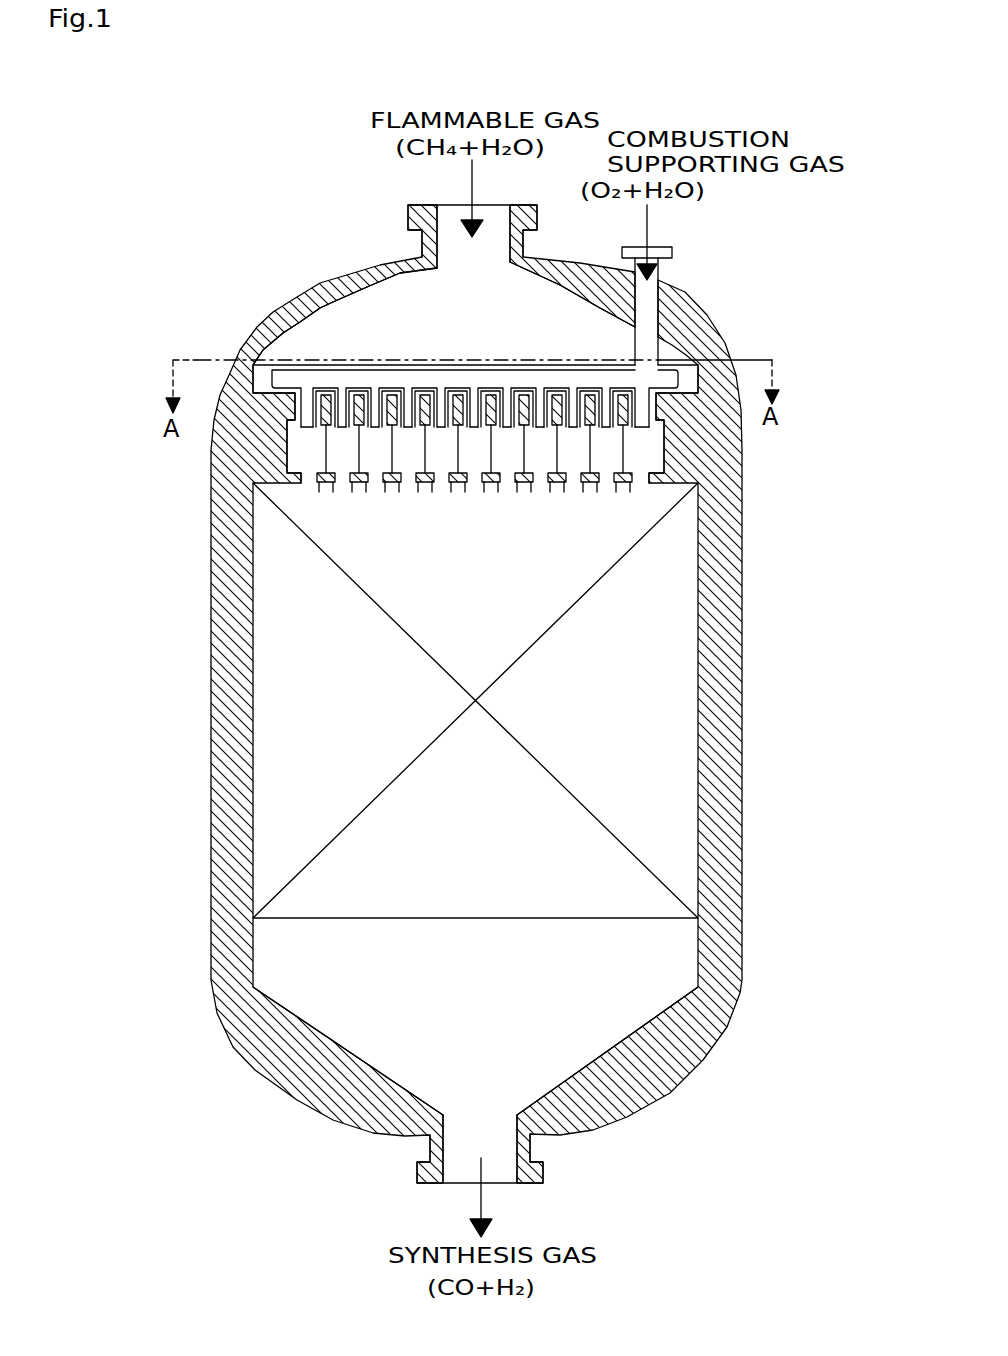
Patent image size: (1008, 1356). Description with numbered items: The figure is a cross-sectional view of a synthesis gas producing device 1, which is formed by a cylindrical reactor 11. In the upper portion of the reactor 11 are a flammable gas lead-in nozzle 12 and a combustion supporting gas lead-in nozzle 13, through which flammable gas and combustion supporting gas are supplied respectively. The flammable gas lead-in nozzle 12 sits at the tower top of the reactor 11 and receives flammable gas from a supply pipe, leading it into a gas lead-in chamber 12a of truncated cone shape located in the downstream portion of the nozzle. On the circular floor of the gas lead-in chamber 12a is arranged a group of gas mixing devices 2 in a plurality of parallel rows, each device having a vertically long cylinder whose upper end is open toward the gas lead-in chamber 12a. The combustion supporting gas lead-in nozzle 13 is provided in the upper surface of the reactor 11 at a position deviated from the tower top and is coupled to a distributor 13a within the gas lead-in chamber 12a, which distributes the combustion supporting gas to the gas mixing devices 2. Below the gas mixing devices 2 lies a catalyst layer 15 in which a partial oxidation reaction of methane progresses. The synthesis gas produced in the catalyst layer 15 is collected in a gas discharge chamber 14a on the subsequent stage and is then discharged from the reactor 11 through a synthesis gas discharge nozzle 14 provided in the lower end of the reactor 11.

The synthesis gas producing device 1 is at (797, 279).
The gas mixing device 2 is at (676, 441).
The reactor 11 is at (742, 622).
The flammable gas lead-in nozzle 12 is at (421, 245).
The gas lead-in chamber 12a is at (345, 336).
The combustion supporting gas lead-in nozzle 13 is at (660, 270).
The distributor 13a is at (297, 348).
The synthesis gas discharge nozzle 14 is at (532, 1148).
The gas discharge chamber 14a is at (603, 1022).
The catalyst layer 15 is at (687, 539).